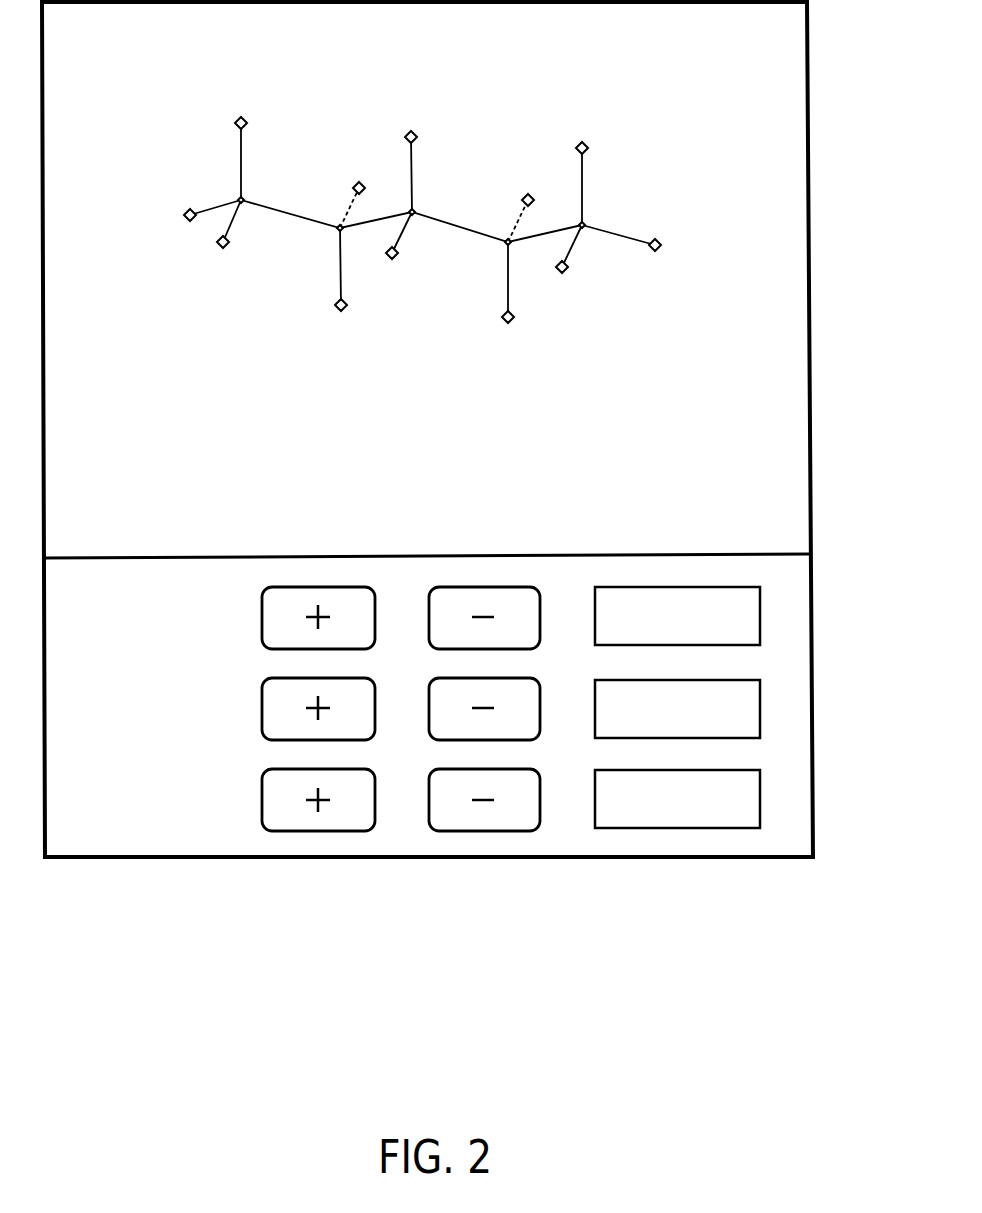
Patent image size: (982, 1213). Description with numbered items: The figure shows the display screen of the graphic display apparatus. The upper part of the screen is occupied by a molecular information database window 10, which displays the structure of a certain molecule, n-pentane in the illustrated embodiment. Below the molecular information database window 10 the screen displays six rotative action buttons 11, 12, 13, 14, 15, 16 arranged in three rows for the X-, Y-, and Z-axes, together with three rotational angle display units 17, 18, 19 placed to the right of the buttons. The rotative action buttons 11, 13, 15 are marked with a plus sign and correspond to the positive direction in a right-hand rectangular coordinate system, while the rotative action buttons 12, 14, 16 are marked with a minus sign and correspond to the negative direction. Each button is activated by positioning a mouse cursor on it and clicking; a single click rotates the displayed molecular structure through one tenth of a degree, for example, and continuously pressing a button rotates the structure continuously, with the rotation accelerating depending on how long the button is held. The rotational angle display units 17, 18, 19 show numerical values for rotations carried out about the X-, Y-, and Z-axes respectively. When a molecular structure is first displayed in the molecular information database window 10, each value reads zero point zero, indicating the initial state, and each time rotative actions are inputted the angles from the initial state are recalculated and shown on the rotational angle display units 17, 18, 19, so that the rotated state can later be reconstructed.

The molecular information database window 10 is at (783, 101).
The rotative action button 11 is at (348, 588).
The rotative action button 12 is at (500, 588).
The rotative action button 13 is at (272, 707).
The rotative action button 14 is at (537, 703).
The rotative action button 15 is at (333, 831).
The rotative action button 16 is at (496, 826).
The rotational angle display unit 17 is at (760, 615).
The rotational angle display unit 18 is at (760, 710).
The rotational angle display unit 19 is at (760, 798).